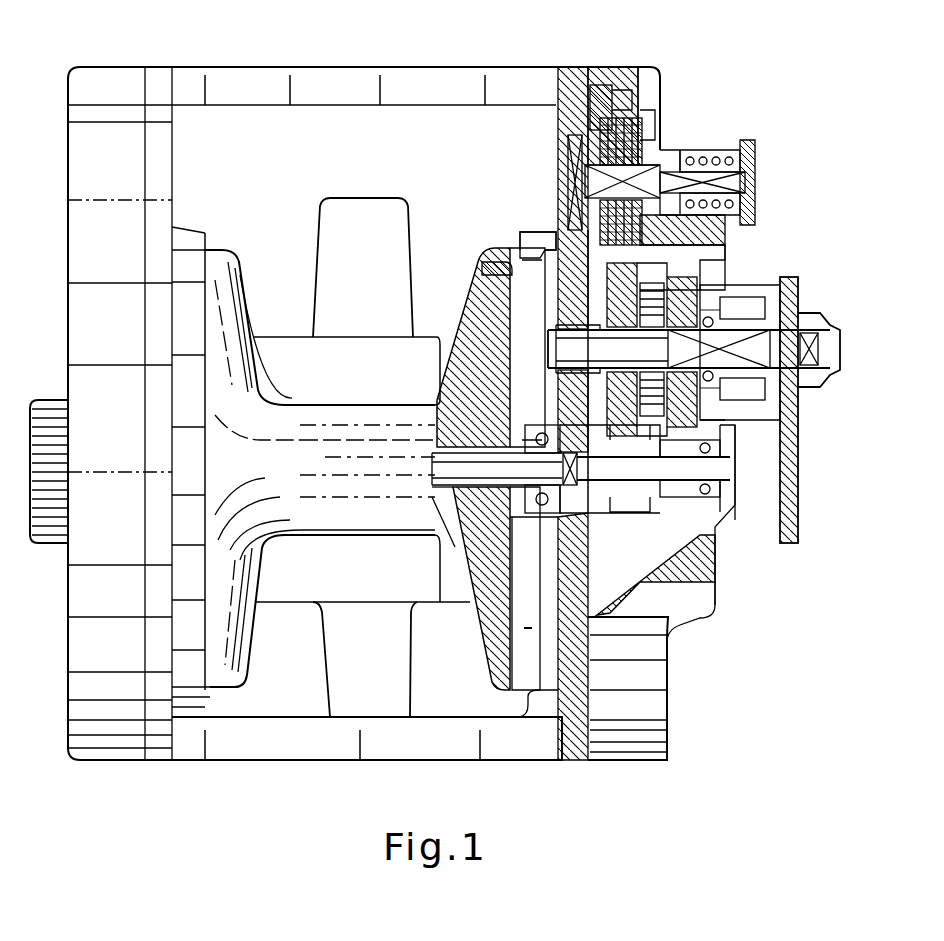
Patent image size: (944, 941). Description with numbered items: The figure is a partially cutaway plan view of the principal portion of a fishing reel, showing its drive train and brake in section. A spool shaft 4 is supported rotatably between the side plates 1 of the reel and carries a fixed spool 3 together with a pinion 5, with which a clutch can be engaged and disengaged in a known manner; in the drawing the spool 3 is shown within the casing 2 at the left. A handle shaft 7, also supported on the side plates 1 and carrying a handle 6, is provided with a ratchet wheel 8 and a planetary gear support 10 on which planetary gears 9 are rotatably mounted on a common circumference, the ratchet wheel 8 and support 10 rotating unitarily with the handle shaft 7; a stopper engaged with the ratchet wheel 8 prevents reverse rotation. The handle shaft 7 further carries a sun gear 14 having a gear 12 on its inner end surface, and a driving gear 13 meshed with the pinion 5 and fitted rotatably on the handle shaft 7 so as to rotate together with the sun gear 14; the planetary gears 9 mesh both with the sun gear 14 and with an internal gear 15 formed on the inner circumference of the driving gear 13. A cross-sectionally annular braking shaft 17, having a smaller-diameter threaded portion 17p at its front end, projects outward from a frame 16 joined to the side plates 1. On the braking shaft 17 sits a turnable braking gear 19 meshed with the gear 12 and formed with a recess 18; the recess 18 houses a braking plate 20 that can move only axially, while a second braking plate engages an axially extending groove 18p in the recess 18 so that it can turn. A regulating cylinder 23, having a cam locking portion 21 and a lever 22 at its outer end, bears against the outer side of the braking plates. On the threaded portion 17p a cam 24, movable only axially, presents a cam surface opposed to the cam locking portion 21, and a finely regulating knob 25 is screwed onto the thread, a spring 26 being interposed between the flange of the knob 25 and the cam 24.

The side plates 1 is at (590, 77).
The pump casing 2 is at (108, 80).
The spool 3 is at (488, 298).
The spool shaft 4 is at (453, 503).
The pinion 5 is at (645, 495).
The handle 6 is at (800, 432).
The handle shaft 7 is at (760, 348).
The ratchet wheel 8 is at (705, 287).
The planetary gears 9 is at (668, 470).
The planetary gear support 10 is at (720, 395).
The gear 12 is at (495, 268).
The driving gear 13 is at (548, 234).
The sun gear 14 is at (668, 352).
The internal gear 15 is at (635, 485).
The frame 16 is at (565, 80).
The braking shaft 17 is at (595, 182).
The smaller-diameter threaded portion 17p is at (752, 180).
The recess 18 is at (568, 150).
The axially extending groove 18p is at (650, 126).
The braking gear 19 is at (602, 90).
The braking plate 20 is at (600, 118).
The cam locking portion 21 is at (662, 160).
The lever 22 is at (728, 233).
The regulating cylinder 23 is at (712, 250).
The cam 24 is at (690, 155).
The finely regulating knob 25 is at (745, 140).
The spring 26 is at (703, 160).